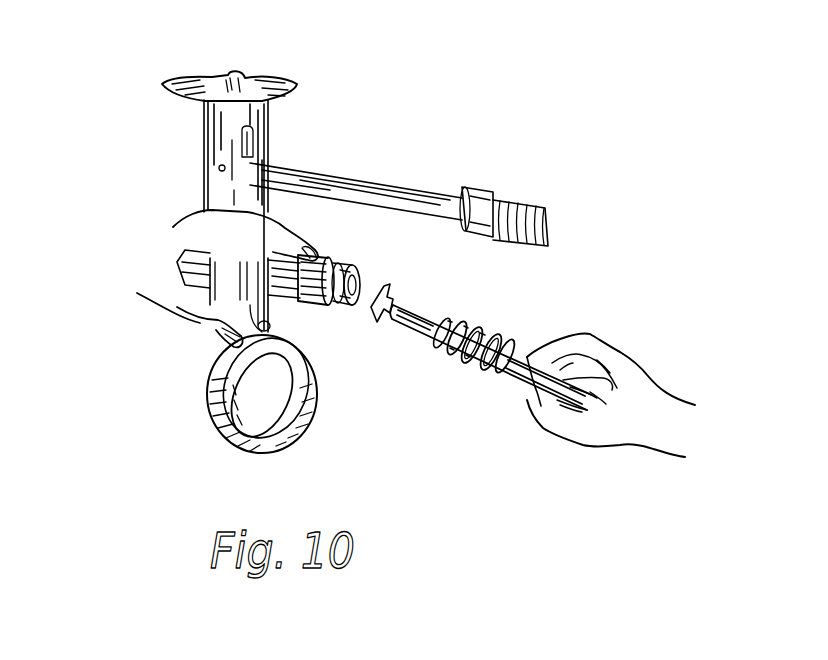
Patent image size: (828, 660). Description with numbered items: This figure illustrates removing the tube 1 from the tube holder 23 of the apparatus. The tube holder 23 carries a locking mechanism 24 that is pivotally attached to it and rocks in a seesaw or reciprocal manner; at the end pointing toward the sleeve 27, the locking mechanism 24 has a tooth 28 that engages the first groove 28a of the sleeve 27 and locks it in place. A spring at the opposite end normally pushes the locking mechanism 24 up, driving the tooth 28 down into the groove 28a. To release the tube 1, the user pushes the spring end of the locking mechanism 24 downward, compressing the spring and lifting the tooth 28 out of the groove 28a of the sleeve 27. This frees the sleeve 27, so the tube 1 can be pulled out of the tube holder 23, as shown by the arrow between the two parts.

The tube 1 is at (540, 350).
The tube holder 23 is at (323, 304).
The locking mechanism 24 is at (317, 253).
The sleeve 27 is at (462, 362).
The tooth 28 is at (358, 279).
The first groove 28a is at (465, 318).